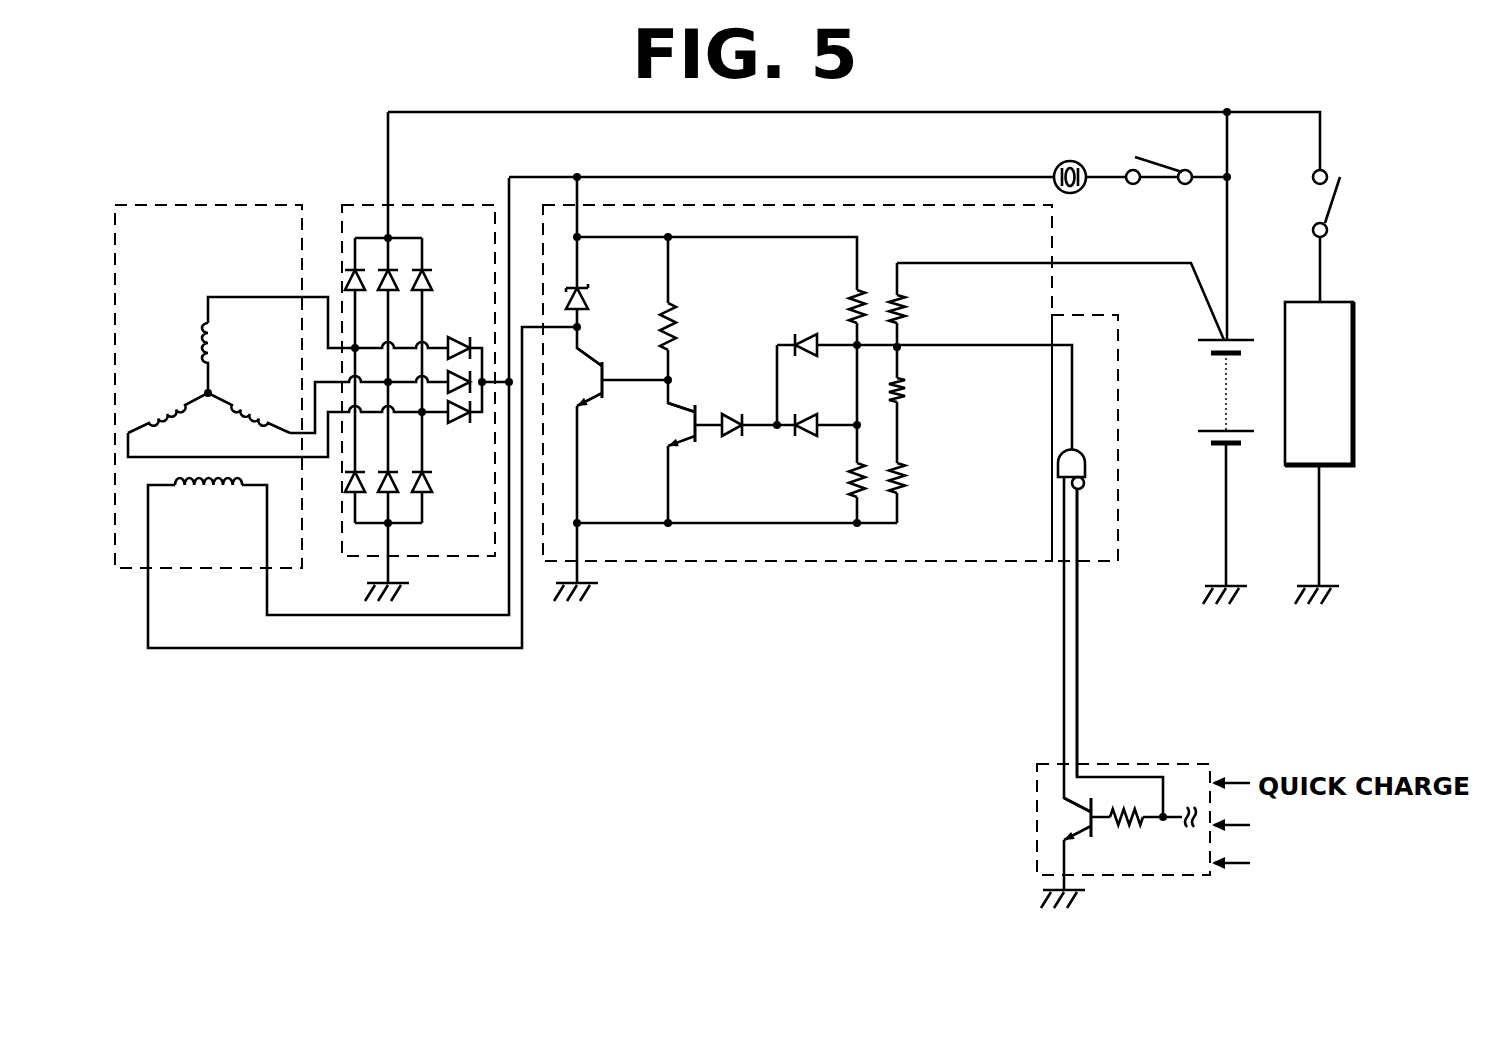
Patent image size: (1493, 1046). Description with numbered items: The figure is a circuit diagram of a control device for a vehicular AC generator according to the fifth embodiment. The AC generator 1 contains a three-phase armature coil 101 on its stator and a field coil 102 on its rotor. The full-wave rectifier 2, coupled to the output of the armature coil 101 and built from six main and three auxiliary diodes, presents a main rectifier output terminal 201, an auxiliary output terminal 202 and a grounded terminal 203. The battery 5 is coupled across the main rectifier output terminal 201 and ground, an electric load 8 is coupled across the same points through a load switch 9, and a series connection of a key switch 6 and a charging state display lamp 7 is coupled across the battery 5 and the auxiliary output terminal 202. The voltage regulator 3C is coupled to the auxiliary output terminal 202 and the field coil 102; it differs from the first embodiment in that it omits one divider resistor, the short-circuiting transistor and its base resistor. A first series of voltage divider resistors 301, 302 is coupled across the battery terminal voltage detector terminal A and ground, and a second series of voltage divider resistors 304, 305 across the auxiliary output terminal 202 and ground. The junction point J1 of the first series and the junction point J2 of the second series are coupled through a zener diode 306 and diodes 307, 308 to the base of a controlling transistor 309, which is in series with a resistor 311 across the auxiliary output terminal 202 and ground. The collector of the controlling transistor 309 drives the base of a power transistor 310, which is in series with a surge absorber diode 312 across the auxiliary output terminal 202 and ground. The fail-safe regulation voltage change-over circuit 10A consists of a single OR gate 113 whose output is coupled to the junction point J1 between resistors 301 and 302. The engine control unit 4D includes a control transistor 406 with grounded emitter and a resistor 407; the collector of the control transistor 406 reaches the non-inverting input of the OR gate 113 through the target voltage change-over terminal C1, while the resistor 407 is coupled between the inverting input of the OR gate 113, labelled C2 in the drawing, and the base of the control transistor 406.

The AC generator 1 is at (215, 205).
The full-wave rectifier 2 is at (422, 205).
The voltage regulator 3C is at (741, 561).
The fail-safe regulation voltage change-over circuit 10A is at (1050, 562).
The engine control unit 4D is at (1037, 840).
The battery 5 is at (1218, 385).
The key switch 6 is at (1175, 166).
The charging state display lamp 7 is at (1056, 164).
The electric load 8 is at (1353, 410).
The load switch 9 is at (1334, 207).
The three-phase armature coil 101 is at (206, 333).
The field coil 102 is at (210, 490).
The main rectifier output terminal 201 is at (390, 238).
The auxiliary output terminal 202 is at (485, 388).
The grounded terminal 203 is at (390, 523).
The voltage divider resistor 301 is at (904, 302).
The voltage divider resistor 302 is at (905, 385).
The voltage divider resistor 304 is at (850, 305).
The voltage divider resistor 305 is at (848, 485).
The zener diode 306 is at (734, 413).
The diode 307 is at (803, 337).
The diode 308 is at (808, 420).
The controlling transistor 309 is at (688, 447).
The power transistor 310 is at (605, 403).
The resistor 311 is at (672, 325).
The surge absorber diode 312 is at (582, 297).
The OR gate 113 is at (1058, 468).
The control transistor 406 is at (1058, 810).
The resistor 407 is at (1148, 825).
The battery terminal voltage detector terminal A is at (1165, 262).
The junction point J1 is at (898, 347).
The junction point J2 is at (865, 428).
The target voltage change-over terminal C1 is at (1064, 700).
The control line C2 is at (1077, 690).